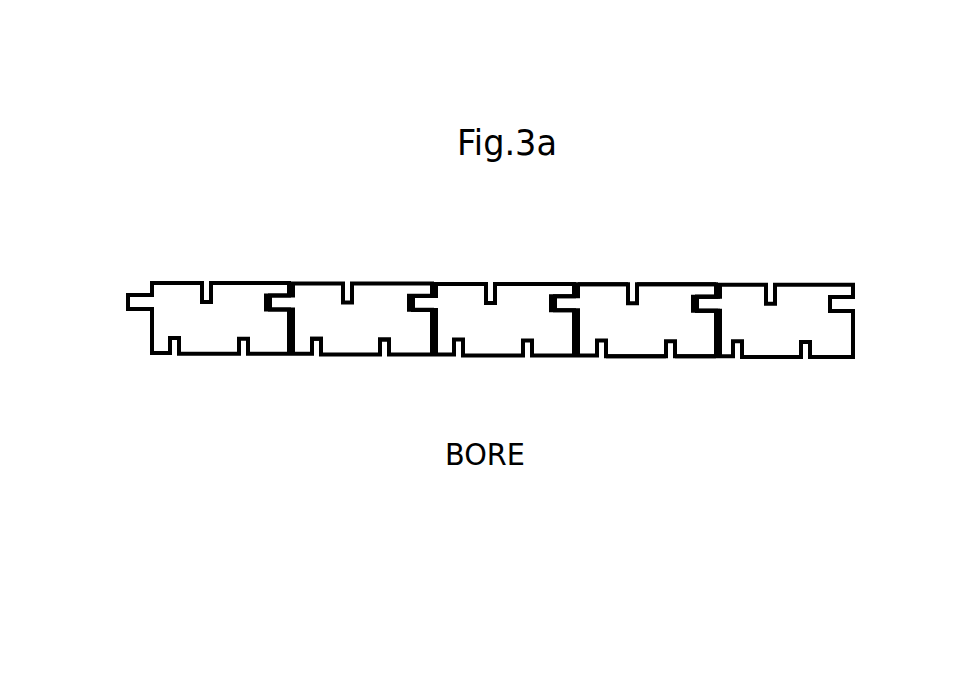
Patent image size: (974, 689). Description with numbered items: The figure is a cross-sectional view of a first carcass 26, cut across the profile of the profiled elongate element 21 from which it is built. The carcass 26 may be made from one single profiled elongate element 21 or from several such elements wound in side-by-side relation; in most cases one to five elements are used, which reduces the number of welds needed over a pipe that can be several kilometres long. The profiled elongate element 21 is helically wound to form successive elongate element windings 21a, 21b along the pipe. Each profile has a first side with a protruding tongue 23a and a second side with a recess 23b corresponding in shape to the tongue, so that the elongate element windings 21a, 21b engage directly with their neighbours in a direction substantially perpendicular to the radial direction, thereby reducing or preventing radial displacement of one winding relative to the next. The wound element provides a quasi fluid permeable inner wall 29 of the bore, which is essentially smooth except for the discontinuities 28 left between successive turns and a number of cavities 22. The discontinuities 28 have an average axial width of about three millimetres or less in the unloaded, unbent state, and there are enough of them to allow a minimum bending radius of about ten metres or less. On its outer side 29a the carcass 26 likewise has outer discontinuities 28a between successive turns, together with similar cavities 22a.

The profiled elongate element 21 is at (205, 323).
The elongate element winding 21a is at (517, 336).
The elongate element winding 21b is at (662, 336).
The cavities 22 is at (383, 362).
The cavities 22a is at (348, 280).
The protruding tongue 23a is at (142, 296).
The recess 23b is at (847, 303).
The carcass 26 is at (827, 208).
The discontinuities 28 is at (289, 358).
The outer discontinuities 28a is at (291, 281).
The quasi fluid permeable inner wall 29 is at (633, 365).
The outer side 29a is at (597, 260).